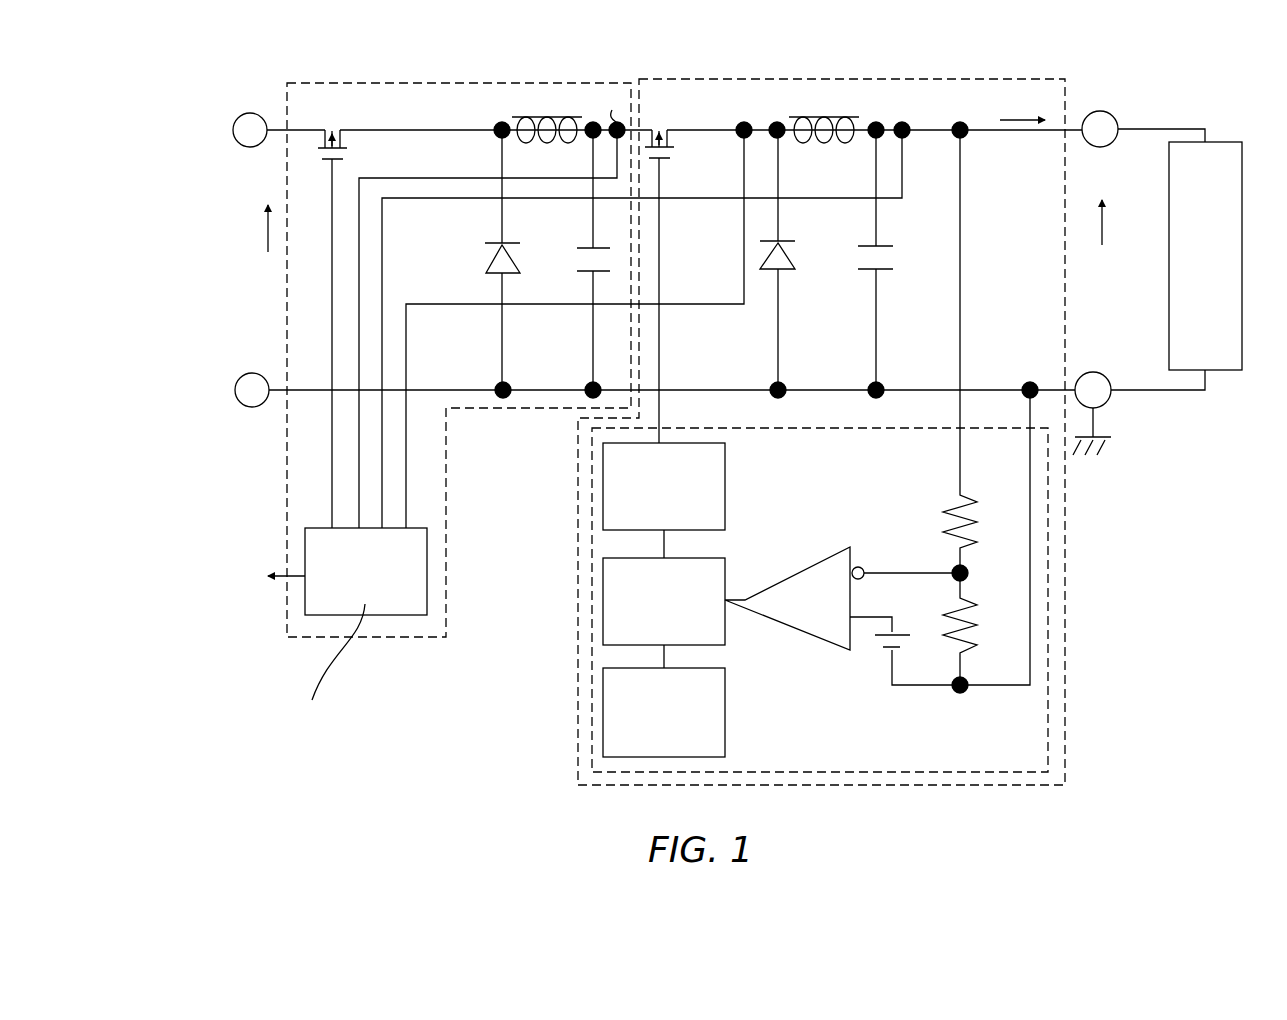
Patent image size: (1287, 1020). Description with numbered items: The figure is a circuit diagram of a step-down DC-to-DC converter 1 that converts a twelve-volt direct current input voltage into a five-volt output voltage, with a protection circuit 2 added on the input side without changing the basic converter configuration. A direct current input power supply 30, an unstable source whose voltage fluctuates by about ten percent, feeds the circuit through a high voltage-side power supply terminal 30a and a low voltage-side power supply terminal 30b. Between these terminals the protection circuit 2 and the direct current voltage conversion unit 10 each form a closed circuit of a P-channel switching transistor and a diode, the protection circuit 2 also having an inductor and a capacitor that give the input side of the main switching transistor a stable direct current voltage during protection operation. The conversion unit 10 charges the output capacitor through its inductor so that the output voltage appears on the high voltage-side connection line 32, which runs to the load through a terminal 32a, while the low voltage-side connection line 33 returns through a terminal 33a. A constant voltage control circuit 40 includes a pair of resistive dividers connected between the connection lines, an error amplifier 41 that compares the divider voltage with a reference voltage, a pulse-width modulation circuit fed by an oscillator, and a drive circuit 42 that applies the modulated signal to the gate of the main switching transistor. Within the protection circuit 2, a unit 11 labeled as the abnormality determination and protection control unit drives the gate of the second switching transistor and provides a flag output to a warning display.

The step-down DC-to-DC converter 1 is at (1152, 90).
The protection circuit 2 is at (546, 448).
The direct current voltage conversion unit 10 is at (875, 423).
The abnormality determination and protection control unit 11 is at (427, 550).
The direct current input power supply 30 is at (329, 260).
The high voltage-side power supply terminal 30a is at (250, 148).
The low voltage-side power supply terminal 30b is at (252, 372).
The high voltage-side connection line 32 is at (995, 132).
The output terminal 32a is at (1100, 111).
The low voltage-side connection line 33 is at (982, 388).
The ground terminal 33a is at (1107, 402).
The constant voltage control circuit 40 is at (859, 600).
The error amplifier 41 is at (805, 632).
The drive circuit 42 is at (725, 478).